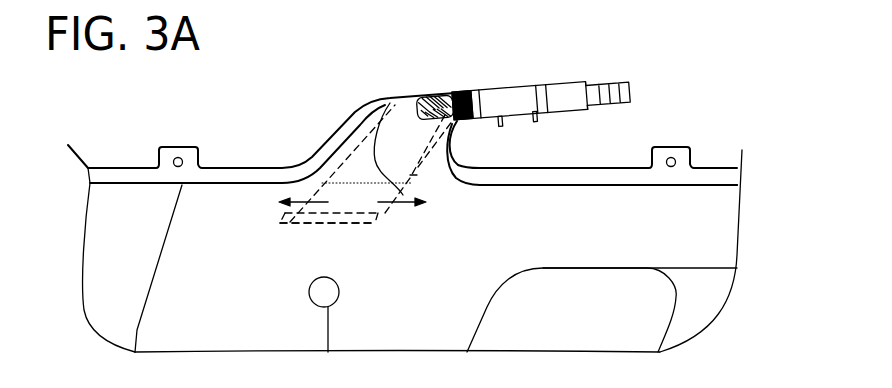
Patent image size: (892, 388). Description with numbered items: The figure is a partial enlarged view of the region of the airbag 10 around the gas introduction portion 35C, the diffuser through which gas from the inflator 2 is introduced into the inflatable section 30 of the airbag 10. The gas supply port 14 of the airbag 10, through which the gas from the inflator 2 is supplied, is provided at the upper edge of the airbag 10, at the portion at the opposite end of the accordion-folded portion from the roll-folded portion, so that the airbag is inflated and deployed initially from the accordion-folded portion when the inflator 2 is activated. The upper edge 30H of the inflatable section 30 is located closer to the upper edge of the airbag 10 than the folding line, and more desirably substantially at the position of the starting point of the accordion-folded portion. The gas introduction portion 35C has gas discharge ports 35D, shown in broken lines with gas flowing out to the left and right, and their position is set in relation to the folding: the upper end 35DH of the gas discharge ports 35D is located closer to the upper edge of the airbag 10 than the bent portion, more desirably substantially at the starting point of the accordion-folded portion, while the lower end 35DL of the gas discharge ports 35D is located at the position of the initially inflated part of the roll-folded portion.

The airbag 10 is at (695, 108).
The inflator 2 is at (507, 87).
The gas supply port 14 is at (453, 92).
The inflatable section 30 is at (722, 243).
The upper edge of inflatable section 30H is at (692, 187).
The gas introduction portion 35C is at (353, 167).
The gas discharge ports 35D is at (287, 213).
The upper end of gas discharge ports 35DH is at (390, 103).
The lower end of gas discharge ports 35DL is at (357, 224).